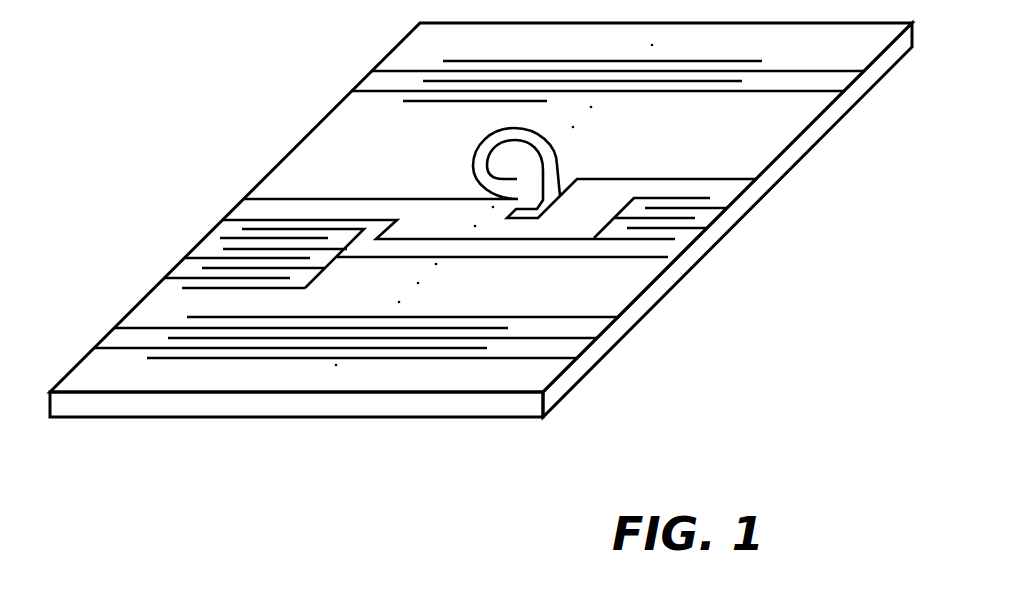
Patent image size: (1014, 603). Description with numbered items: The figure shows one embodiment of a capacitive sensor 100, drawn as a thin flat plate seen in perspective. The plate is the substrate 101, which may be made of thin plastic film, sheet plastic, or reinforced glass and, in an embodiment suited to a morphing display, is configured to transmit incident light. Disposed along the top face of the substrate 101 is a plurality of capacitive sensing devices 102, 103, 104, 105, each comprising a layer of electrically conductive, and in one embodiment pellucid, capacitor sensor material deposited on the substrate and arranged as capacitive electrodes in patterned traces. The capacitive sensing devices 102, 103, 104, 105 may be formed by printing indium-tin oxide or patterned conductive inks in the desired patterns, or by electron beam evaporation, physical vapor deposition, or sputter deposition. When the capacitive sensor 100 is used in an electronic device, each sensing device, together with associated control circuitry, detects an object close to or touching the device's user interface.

The capacitive sensor 100 is at (737, 238).
The substrate 101 is at (655, 290).
The capacitive sensing device 102 is at (213, 252).
The capacitive sensing device 103 is at (445, 337).
The capacitive sensing device 104 is at (711, 198).
The capacitive sensing device 105 is at (633, 82).